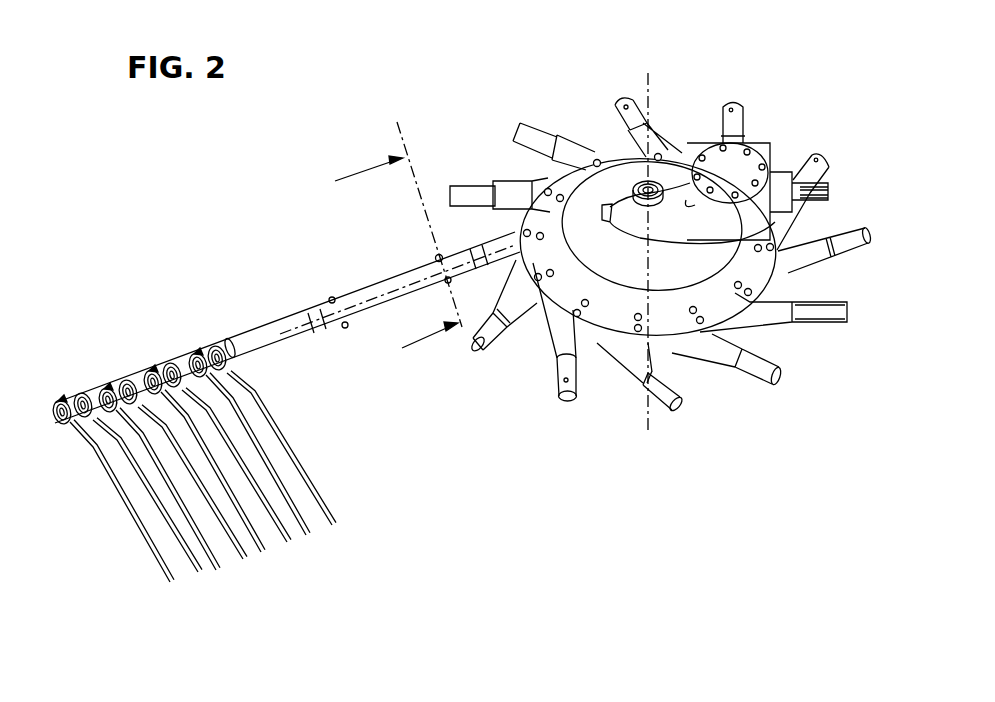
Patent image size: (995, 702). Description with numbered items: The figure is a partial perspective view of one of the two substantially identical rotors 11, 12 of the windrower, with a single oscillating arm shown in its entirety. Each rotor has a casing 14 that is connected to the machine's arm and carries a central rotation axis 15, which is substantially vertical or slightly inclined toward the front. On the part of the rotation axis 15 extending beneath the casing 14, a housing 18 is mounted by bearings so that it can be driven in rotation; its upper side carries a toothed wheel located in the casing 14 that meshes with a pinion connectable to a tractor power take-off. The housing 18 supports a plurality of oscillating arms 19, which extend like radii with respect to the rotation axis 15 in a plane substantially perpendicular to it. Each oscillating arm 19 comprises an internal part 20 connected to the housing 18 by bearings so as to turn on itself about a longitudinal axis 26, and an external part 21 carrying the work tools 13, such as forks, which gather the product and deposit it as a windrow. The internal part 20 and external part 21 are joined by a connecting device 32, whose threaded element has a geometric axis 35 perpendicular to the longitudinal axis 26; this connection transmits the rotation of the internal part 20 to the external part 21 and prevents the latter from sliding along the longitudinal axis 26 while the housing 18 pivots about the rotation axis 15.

The rotor 11 is at (190, 182).
The rotor 12 is at (461, 304).
The work tools 13 is at (142, 538).
The casing 14 is at (615, 170).
The rotation axis 15 is at (647, 73).
The housing 18 is at (533, 220).
The oscillating arms 19 is at (226, 340).
The internal part 20 is at (557, 383).
The external part 21 is at (330, 313).
The longitudinal axis 26 is at (373, 300).
The connecting device 32 is at (430, 255).
The geometric axis 35 is at (403, 130).